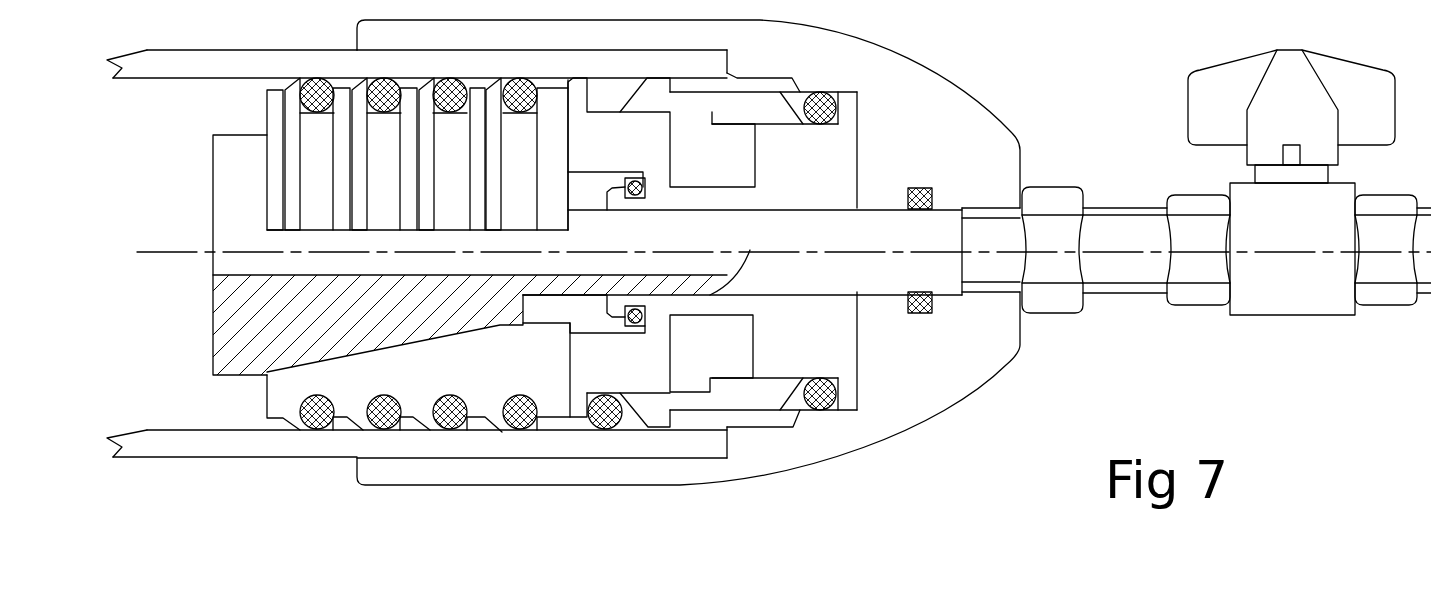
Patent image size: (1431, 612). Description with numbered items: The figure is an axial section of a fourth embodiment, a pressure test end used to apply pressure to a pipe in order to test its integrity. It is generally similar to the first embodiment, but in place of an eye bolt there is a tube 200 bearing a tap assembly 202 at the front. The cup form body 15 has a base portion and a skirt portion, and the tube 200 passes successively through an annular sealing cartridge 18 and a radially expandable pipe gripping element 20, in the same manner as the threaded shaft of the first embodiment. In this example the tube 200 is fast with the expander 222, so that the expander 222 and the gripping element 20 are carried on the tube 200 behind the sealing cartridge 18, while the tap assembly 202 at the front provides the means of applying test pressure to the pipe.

The cup form body 15 is at (912, 452).
The annular sealing cartridge 18 is at (692, 430).
The radially expandable pipe gripping element 20 is at (425, 407).
The tube 200 is at (947, 290).
The tap assembly 202 is at (1307, 328).
The expander 222 is at (243, 377).